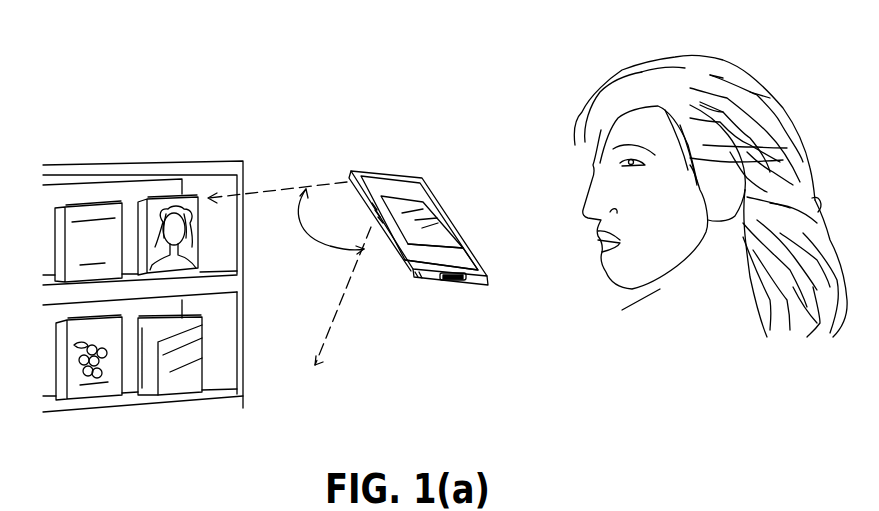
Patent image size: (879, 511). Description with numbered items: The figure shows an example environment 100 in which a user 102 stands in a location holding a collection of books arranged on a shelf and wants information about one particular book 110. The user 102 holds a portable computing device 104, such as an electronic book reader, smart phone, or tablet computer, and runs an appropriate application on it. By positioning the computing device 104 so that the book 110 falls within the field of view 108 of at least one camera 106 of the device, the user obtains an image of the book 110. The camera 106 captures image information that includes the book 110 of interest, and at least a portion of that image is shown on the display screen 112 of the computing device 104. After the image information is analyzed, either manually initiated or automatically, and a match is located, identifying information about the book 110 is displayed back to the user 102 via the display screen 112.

The environment 100 is at (127, 104).
The user 102 is at (565, 112).
The computing device 104 is at (421, 277).
The camera 106 is at (391, 177).
The field of view 108 is at (289, 273).
The book 110 is at (187, 391).
The display screen 112 is at (444, 211).